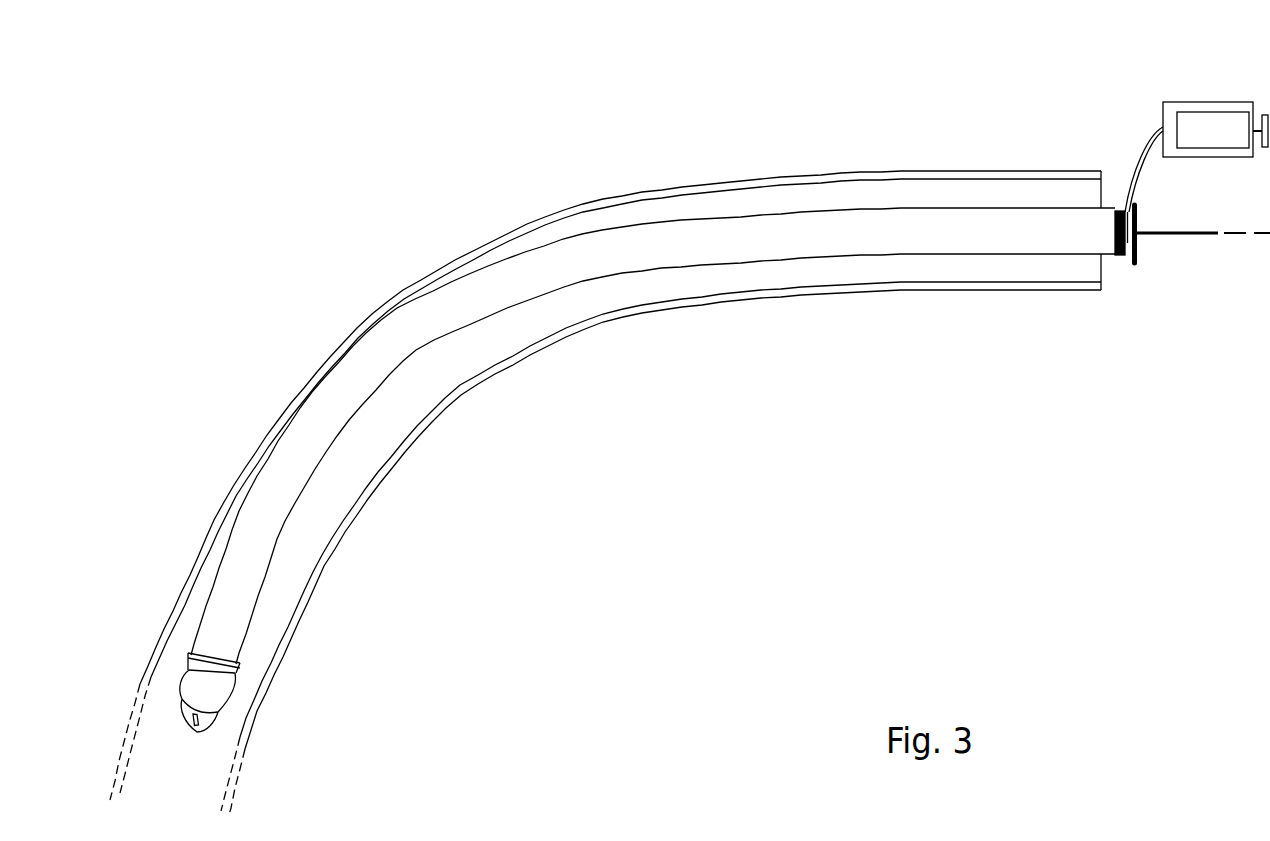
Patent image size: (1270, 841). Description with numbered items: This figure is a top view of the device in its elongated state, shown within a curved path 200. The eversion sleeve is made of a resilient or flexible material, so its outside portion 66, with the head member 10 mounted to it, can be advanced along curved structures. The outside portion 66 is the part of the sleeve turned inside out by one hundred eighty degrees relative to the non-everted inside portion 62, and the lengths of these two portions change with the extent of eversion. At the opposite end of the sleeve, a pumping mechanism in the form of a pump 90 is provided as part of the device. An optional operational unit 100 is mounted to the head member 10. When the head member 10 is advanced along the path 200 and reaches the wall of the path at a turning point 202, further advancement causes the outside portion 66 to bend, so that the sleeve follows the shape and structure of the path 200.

The head member 10 is at (215, 690).
The inside portion 62 is at (1173, 237).
The outside portion 66 is at (813, 233).
The pump 90 is at (1212, 125).
The operational unit 100 is at (199, 725).
The curved path 200 is at (656, 183).
The turning point 202 is at (303, 393).